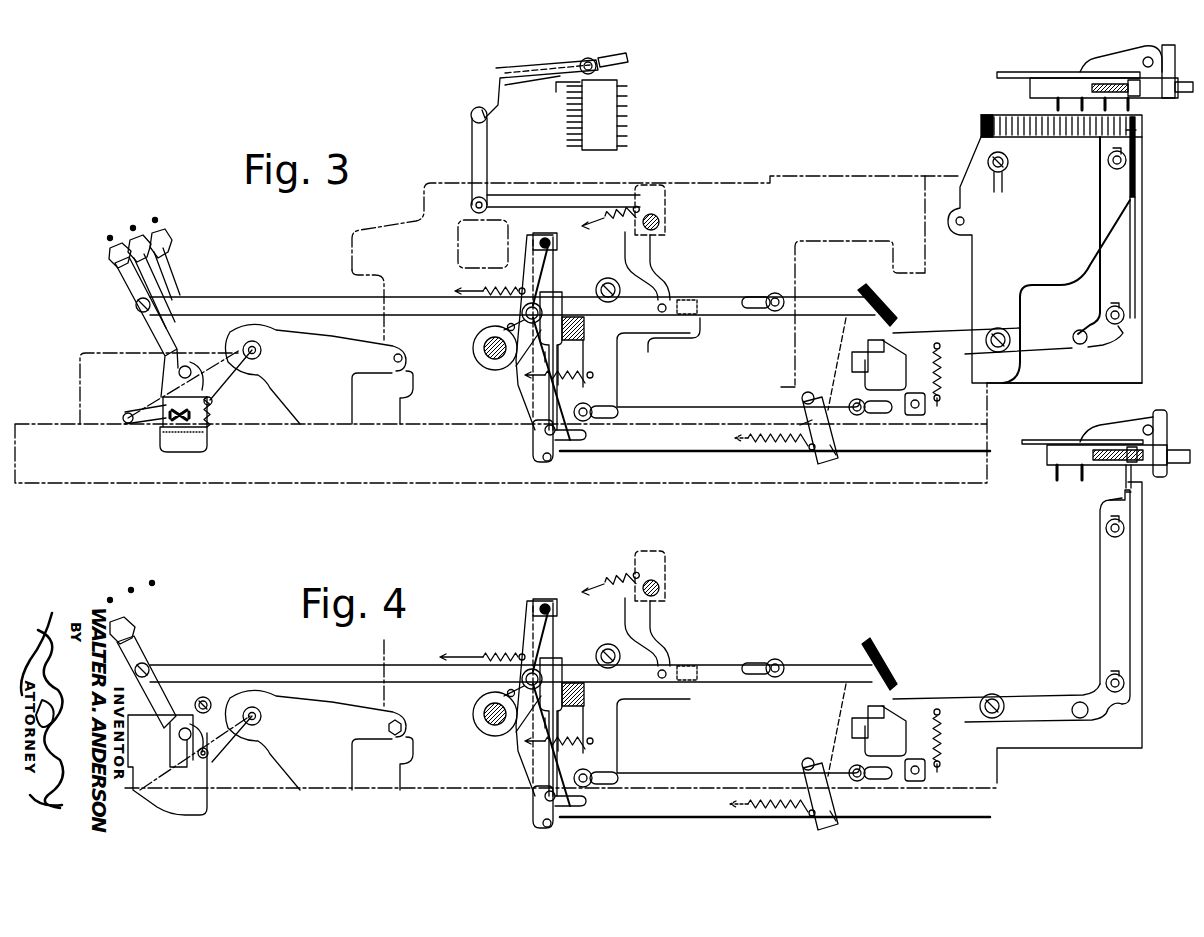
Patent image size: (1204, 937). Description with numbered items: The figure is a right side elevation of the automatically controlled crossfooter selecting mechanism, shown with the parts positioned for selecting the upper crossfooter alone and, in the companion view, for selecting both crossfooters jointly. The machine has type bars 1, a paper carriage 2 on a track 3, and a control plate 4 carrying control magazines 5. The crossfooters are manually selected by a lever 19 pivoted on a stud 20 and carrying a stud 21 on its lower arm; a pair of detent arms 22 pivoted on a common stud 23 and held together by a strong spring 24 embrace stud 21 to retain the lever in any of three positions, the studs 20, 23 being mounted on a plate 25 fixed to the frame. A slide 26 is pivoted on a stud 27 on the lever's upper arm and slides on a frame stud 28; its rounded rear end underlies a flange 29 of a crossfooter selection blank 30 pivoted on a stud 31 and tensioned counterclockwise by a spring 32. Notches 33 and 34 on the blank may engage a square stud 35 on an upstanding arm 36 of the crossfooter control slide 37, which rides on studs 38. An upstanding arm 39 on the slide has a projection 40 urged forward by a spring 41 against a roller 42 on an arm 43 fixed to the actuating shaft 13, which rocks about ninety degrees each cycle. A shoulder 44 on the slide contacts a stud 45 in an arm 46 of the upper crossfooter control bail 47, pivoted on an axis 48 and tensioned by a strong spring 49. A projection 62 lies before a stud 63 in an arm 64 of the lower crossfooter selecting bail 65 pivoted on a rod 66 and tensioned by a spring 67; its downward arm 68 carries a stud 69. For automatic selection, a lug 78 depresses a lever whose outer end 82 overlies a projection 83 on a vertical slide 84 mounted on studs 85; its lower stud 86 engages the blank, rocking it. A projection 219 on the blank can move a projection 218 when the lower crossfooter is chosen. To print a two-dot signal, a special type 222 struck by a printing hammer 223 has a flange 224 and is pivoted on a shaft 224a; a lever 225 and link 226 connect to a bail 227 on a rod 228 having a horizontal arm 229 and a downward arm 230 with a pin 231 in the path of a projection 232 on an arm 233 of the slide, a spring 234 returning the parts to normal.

In FIG. 3, the type bars 1 is at (633, 104).
In FIG. 4, the type bars 1 is at (118, 613).
In FIG. 3, the paper carriage 2 is at (138, 236).
In FIG. 4, the paper carriage 2 is at (129, 583).
In FIG. 3, the track 3 is at (160, 230).
In FIG. 4, the track 3 is at (150, 576).
In FIG. 3, the control plate 4 is at (1009, 72).
In FIG. 4, the control plate 4 is at (1082, 430).
In FIG. 3, the control magazines 5 is at (1035, 85).
In FIG. 4, the control magazines 5 is at (1118, 455).
In FIG. 3, the actuating shaft 13 is at (483, 353).
In FIG. 4, the actuating shaft 13 is at (475, 726).
In FIG. 3, the lever 19 is at (127, 289).
In FIG. 4, the lever 19 is at (142, 650).
In FIG. 3, the stud 20 is at (187, 365).
In FIG. 4, the stud 20 is at (186, 728).
In FIG. 3, the stud 21 is at (213, 398).
In FIG. 3, the detent arms 22 is at (190, 397).
In FIG. 3, the stud 23 is at (126, 423).
In FIG. 3, the spring 24 is at (212, 422).
In FIG. 3, the plate 25 is at (86, 340).
In FIG. 3, the slide 26 is at (293, 297).
In FIG. 4, the slide 26 is at (282, 665).
In FIG. 3, the stud 27 is at (139, 309).
In FIG. 4, the stud 27 is at (150, 670).
In FIG. 3, the stud 28 is at (780, 295).
In FIG. 4, the stud 28 is at (763, 659).
In FIG. 3, the flange 29 is at (878, 306).
In FIG. 4, the flange 29 is at (888, 664).
In FIG. 3, the crossfooter selection blank 30 is at (955, 332).
In FIG. 4, the crossfooter selection blank 30 is at (1007, 696).
In FIG. 3, the stud 31 is at (1003, 320).
In FIG. 4, the stud 31 is at (997, 694).
In FIG. 3, the spring 32 is at (941, 372).
In FIG. 4, the spring 32 is at (954, 735).
In FIG. 3, the notch 33 is at (868, 345).
In FIG. 4, the notch 33 is at (848, 703).
In FIG. 3, the notch 34 is at (852, 360).
In FIG. 4, the notch 34 is at (839, 724).
In FIG. 3, the square stud 35 is at (876, 354).
In FIG. 4, the square stud 35 is at (885, 731).
In FIG. 3, the upstanding arm 36 is at (848, 380).
In FIG. 3, the crossfooter control slide 37 is at (686, 445).
In FIG. 4, the crossfooter control slide 37 is at (775, 804).
In FIG. 3, the studs 38 is at (581, 407).
In FIG. 4, the studs 38 is at (733, 781).
In FIG. 3, the upstanding arm 39 is at (630, 363).
In FIG. 4, the upstanding arm 39 is at (709, 736).
In FIG. 3, the projection 40 is at (561, 295).
In FIG. 4, the projection 40 is at (562, 717).
In FIG. 3, the spring 41 is at (577, 366).
In FIG. 4, the spring 41 is at (559, 734).
In FIG. 3, the roller 42 is at (528, 304).
In FIG. 4, the roller 42 is at (518, 655).
In FIG. 3, the arm 43 is at (500, 320).
In FIG. 4, the arm 43 is at (477, 689).
In FIG. 3, the shoulder 44 is at (806, 445).
In FIG. 3, the stud 45 is at (812, 452).
In FIG. 4, the stud 45 is at (796, 823).
In FIG. 3, the arm 46 is at (833, 434).
In FIG. 4, the arm 46 is at (829, 796).
In FIG. 3, the upper crossfooter control bail 47 is at (837, 462).
In FIG. 4, the upper crossfooter control bail 47 is at (844, 824).
In FIG. 3, the axis 48 is at (803, 397).
In FIG. 4, the axis 48 is at (794, 756).
In FIG. 3, the spring 49 is at (765, 444).
In FIG. 4, the spring 49 is at (769, 785).
In FIG. 3, the projection 62 is at (532, 430).
In FIG. 4, the projection 62 is at (538, 807).
In FIG. 3, the stud 63 is at (570, 442).
In FIG. 4, the stud 63 is at (559, 725).
In FIG. 3, the arm 64 is at (520, 388).
In FIG. 4, the arm 64 is at (520, 698).
In FIG. 3, the lower crossfooter selecting bail 65 is at (558, 239).
In FIG. 4, the lower crossfooter selecting bail 65 is at (561, 612).
In FIG. 3, the rod 66 is at (545, 238).
In FIG. 4, the rod 66 is at (537, 594).
In FIG. 3, the spring 67 is at (482, 289).
In FIG. 4, the spring 67 is at (482, 643).
In FIG. 3, the arm 68 is at (554, 363).
In FIG. 4, the arm 68 is at (539, 724).
In FIG. 3, the stud 69 is at (541, 460).
In FIG. 4, the stud 69 is at (520, 828).
In FIG. 4, the lug 78 is at (1114, 476).
In FIG. 3, the outer end 82 is at (1136, 118).
In FIG. 4, the outer end 82 is at (1147, 506).
In FIG. 3, the projection 83 is at (1137, 131).
In FIG. 4, the projection 83 is at (1102, 501).
In FIG. 3, the slide 84 is at (1127, 223).
In FIG. 4, the slide 84 is at (1101, 597).
In FIG. 3, the studs 85 is at (1127, 160).
In FIG. 4, the studs 85 is at (1120, 604).
In FIG. 3, the stud 86 is at (1081, 345).
In FIG. 4, the stud 86 is at (1072, 724).
In FIG. 3, the projection 218 is at (913, 416).
In FIG. 4, the projection 218 is at (913, 785).
In FIG. 3, the projection 219 is at (939, 401).
In FIG. 4, the projection 219 is at (949, 776).
In FIG. 3, the special type 222 is at (622, 50).
In FIG. 3, the printing hammer 223 is at (516, 88).
In FIG. 3, the flange 224 is at (556, 86).
In FIG. 3, the shaft 224a is at (582, 62).
In FIG. 3, the lever 225 is at (496, 70).
In FIG. 3, the link 226 is at (472, 167).
In FIG. 3, the bail 227 is at (656, 184).
In FIG. 4, the bail 227 is at (665, 563).
In FIG. 3, the rod 228 is at (660, 222).
In FIG. 3, the horizontal arm 229 is at (557, 195).
In FIG. 3, the arm 230 is at (648, 262).
In FIG. 3, the pin 231 is at (668, 305).
In FIG. 4, the pin 231 is at (654, 698).
In FIG. 3, the projection 232 is at (700, 303).
In FIG. 4, the projection 232 is at (705, 662).
In FIG. 3, the arm 233 is at (650, 341).
In FIG. 3, the spring 234 is at (616, 224).
In FIG. 4, the spring 234 is at (611, 591).